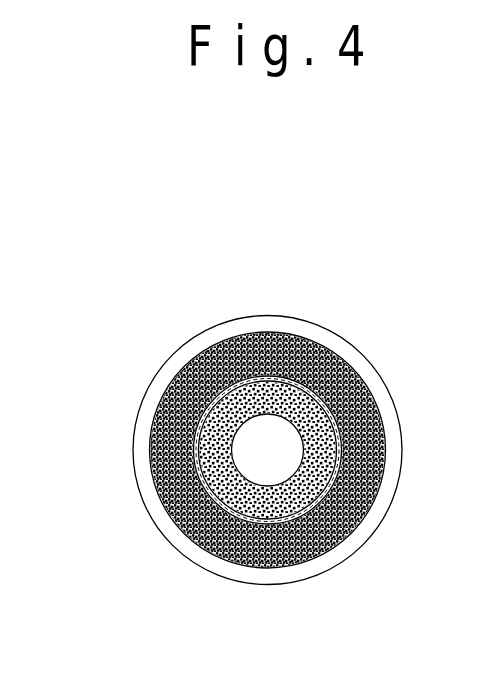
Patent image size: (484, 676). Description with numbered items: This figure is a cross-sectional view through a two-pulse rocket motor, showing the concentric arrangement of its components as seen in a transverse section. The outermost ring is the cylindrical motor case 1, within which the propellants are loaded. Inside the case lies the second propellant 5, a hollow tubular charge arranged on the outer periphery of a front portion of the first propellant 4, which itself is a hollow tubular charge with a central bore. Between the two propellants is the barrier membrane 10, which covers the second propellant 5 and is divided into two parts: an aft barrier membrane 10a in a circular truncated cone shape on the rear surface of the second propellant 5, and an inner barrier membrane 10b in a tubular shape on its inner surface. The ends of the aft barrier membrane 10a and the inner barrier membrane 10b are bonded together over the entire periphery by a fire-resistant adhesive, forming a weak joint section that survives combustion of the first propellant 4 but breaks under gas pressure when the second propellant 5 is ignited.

The motor case 1 is at (180, 361).
The first propellant 4 is at (222, 423).
The second propellant 5 is at (187, 522).
The barrier membrane 10 is at (186, 454).
The aft barrier membrane 10a is at (197, 448).
The inner barrier membrane 10b is at (197, 471).